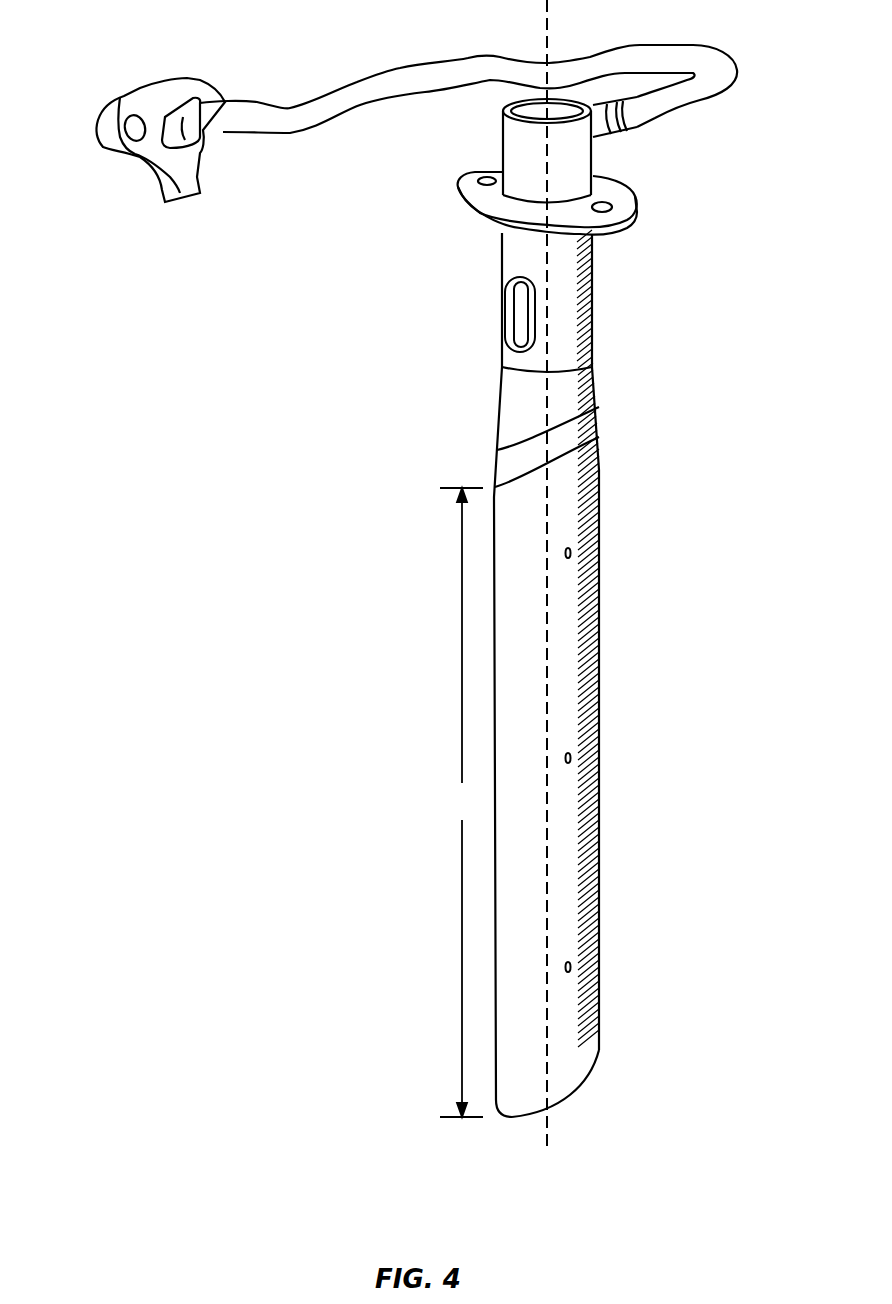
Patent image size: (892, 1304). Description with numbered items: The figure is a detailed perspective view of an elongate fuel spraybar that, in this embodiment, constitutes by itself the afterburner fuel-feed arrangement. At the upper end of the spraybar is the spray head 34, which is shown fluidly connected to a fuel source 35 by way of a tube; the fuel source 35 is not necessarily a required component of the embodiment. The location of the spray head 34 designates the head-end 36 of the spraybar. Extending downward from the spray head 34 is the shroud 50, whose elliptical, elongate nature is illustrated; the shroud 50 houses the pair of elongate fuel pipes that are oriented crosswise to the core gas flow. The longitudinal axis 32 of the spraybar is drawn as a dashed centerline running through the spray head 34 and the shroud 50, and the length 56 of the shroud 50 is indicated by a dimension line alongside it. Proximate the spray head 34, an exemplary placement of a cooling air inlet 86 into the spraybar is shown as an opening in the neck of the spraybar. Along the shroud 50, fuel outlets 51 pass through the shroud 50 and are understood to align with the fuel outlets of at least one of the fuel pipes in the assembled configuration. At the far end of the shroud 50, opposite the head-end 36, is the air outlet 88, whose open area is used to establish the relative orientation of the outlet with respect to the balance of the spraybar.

The longitudinal axis 32 is at (548, 1142).
The spray head 34 is at (650, 163).
The fuel source 35 is at (405, 77).
The head-end 36 is at (372, 405).
The shroud 50 is at (590, 657).
The fuel outlets 51 is at (572, 553).
The length 56 is at (461, 802).
The cooling air inlet 86 is at (518, 310).
The air outlet 88 is at (593, 1100).